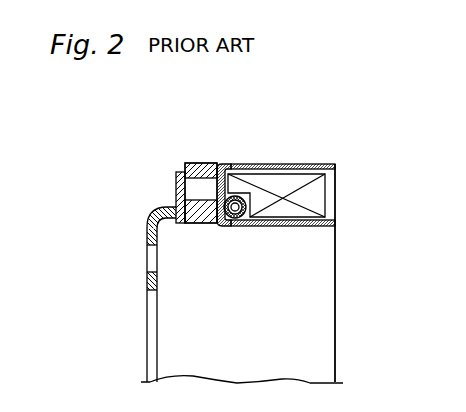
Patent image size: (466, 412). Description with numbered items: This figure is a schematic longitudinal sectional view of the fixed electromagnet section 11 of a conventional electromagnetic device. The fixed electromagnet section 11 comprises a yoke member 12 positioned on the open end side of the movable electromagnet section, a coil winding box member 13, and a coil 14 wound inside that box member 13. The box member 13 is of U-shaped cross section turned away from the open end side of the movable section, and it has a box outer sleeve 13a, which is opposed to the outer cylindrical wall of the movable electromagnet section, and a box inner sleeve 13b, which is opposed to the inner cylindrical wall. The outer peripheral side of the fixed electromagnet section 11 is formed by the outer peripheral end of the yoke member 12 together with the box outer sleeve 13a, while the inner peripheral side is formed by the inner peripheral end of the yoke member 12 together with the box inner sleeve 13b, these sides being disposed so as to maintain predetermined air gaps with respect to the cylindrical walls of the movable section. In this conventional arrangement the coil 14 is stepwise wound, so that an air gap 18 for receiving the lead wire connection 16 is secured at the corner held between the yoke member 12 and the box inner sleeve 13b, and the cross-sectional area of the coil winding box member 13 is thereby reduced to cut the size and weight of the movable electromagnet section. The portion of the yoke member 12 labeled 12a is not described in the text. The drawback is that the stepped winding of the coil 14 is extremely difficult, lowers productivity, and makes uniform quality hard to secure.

The fixed electromagnet section 11 is at (258, 95).
The yoke member 12 is at (158, 159).
The hub flange portion 12a is at (204, 199).
The coil winding box member 13 is at (316, 203).
The box outer sleeve 13a is at (294, 164).
The box inner sleeve 13b is at (290, 227).
The coil 14 is at (228, 164).
The lead wire connection 16 is at (184, 222).
The air gap 18 is at (226, 216).